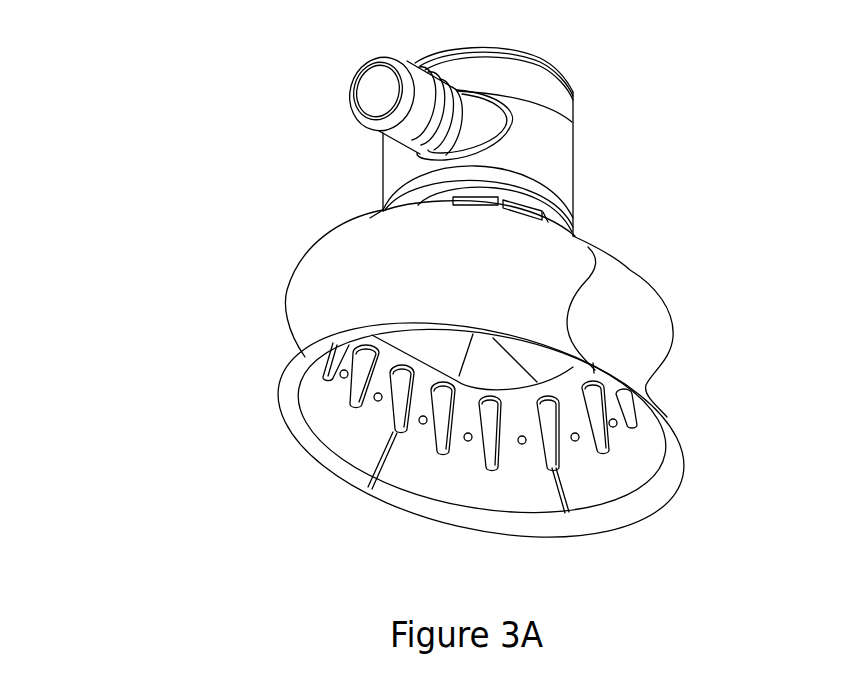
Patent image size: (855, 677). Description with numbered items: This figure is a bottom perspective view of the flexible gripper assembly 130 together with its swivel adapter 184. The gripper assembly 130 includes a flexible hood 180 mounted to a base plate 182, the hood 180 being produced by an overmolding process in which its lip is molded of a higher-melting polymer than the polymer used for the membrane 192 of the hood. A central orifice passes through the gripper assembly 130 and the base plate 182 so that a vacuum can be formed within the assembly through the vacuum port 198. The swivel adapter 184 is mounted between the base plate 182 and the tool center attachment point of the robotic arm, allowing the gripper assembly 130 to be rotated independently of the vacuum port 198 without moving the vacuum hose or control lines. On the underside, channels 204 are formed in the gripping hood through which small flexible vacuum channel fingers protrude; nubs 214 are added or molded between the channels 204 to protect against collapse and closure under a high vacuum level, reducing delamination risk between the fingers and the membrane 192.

The flexible gripper assembly 130 is at (160, 224).
The flexible hood 180 is at (246, 313).
The base plate 182 is at (497, 362).
The swivel adapter 184 is at (586, 105).
The membrane 192 is at (337, 273).
The vacuum port 198 is at (376, 81).
The channels 204 is at (330, 405).
The nubs 214 is at (418, 440).